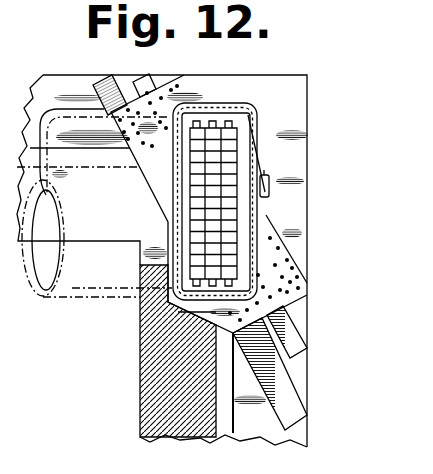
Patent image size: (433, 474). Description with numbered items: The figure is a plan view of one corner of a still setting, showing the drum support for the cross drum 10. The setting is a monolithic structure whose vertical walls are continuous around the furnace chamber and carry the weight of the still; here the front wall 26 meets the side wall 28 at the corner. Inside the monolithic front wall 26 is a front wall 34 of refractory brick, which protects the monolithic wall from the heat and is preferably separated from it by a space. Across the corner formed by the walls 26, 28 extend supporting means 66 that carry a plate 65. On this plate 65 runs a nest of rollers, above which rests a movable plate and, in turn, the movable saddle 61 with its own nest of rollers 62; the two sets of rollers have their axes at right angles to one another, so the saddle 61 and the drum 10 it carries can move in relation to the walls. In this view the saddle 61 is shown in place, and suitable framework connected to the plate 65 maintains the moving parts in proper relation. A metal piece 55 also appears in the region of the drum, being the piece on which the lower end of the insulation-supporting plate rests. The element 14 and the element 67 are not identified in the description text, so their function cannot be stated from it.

The cross drum 10 is at (100, 303).
The frame 14 is at (178, 208).
The front wall 26 is at (83, 66).
The side wall 28 is at (300, 263).
The front wall of refractory brick 34 is at (127, 228).
The metal piece 55 is at (282, 233).
The movable saddle 61 is at (270, 179).
The rollers 62 is at (256, 146).
The plate 65 is at (150, 160).
The supporting means 66 is at (141, 83).
The shaft 67 is at (262, 130).